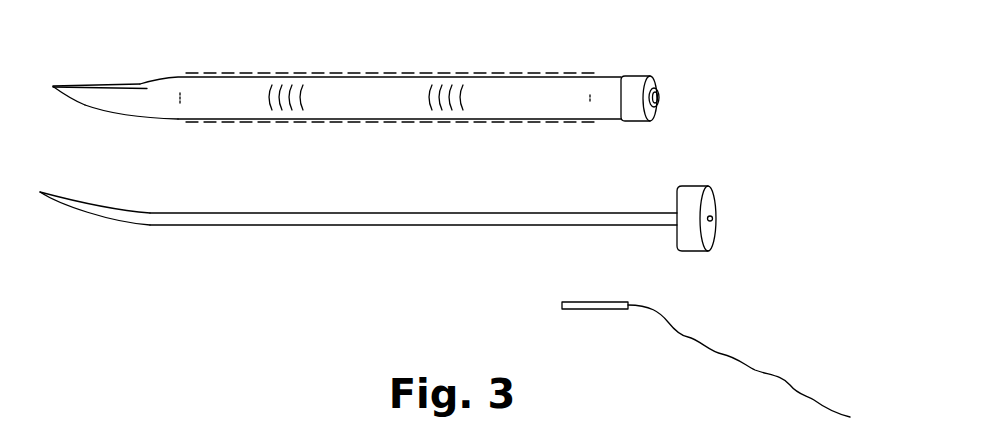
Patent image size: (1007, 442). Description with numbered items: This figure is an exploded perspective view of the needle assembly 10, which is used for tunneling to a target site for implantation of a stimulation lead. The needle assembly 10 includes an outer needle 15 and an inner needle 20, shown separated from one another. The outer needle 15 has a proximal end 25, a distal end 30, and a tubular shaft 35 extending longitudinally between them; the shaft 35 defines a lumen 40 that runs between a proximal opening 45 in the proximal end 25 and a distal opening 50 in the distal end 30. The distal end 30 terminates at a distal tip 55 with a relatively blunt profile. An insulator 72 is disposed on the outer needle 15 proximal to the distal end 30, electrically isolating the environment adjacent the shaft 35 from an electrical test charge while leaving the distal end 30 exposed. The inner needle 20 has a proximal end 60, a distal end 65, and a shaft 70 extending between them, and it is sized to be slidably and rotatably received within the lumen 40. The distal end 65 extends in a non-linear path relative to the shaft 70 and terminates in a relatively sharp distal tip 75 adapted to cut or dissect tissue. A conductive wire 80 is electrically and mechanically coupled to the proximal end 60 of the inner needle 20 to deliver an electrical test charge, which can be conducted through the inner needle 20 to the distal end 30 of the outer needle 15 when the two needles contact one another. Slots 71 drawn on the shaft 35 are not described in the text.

The needle assembly 10 is at (764, 82).
The outer needle 15 is at (238, 58).
The inner needle 20 is at (220, 262).
The proximal end 25 is at (638, 76).
The distal end 30 is at (113, 116).
The shaft 35 is at (348, 76).
The lumen 40 is at (661, 94).
The proximal opening 45 is at (661, 102).
The distal opening 50 is at (101, 85).
The distal tip 55 is at (72, 100).
The proximal end 60 is at (715, 190).
The distal end 65 is at (75, 200).
The shaft 70 is at (293, 213).
The echogenic slots 71 is at (318, 99).
The insulator 72 is at (574, 75).
The distal tip 75 is at (63, 209).
The conductive wire 80 is at (684, 334).